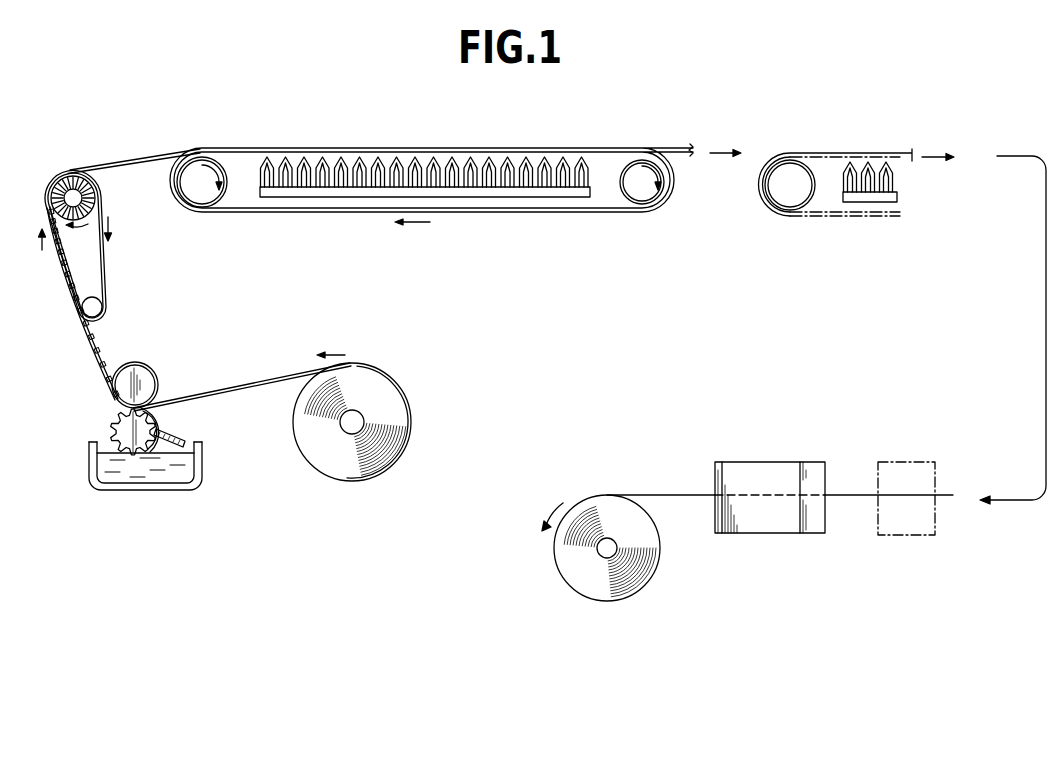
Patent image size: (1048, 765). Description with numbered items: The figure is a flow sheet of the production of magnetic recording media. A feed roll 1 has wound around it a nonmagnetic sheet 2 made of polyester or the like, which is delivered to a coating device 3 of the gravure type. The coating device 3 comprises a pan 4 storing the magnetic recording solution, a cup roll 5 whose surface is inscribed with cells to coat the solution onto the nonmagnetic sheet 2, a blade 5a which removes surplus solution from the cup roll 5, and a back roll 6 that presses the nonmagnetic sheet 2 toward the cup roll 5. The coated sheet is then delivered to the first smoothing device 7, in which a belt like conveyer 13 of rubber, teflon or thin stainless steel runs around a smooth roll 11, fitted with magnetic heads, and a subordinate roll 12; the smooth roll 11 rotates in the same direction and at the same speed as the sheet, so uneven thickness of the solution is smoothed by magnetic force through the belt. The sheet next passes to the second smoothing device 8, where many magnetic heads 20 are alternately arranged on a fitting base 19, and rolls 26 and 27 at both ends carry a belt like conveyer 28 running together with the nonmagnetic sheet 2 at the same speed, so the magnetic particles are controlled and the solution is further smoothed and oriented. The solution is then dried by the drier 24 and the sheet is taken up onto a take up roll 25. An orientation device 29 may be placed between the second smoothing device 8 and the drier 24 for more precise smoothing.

The feed roll 1 is at (390, 436).
The nonmagnetic sheet 2 is at (236, 382).
The coating device 3 is at (208, 502).
The pan 4 is at (104, 487).
The cup roll 5 is at (112, 428).
The blade 5a is at (181, 437).
The back roll 6 is at (153, 367).
The first smoothing device 7 is at (104, 245).
The second smoothing device 8 is at (541, 195).
The smooth roll 11 is at (98, 190).
The subordinate roll 12 is at (99, 309).
The belt like conveyer 13 is at (105, 256).
The fitting base 19 is at (568, 198).
The magnetic heads 20 is at (412, 153).
The drier 24 is at (804, 462).
The take up roll 25 is at (606, 502).
The roll 26 is at (202, 199).
The roll 27 is at (647, 201).
The belt like conveyer 28 is at (300, 212).
The orientation device 29 is at (914, 464).